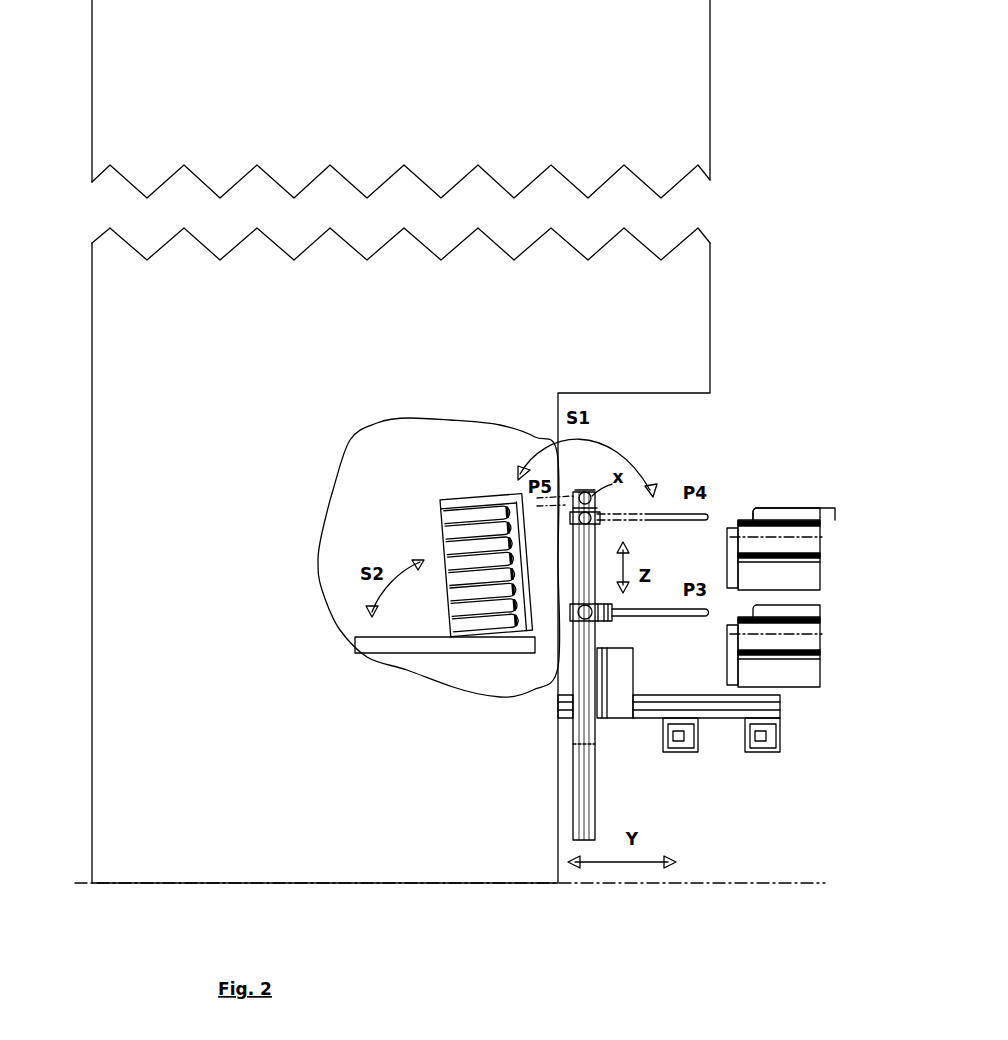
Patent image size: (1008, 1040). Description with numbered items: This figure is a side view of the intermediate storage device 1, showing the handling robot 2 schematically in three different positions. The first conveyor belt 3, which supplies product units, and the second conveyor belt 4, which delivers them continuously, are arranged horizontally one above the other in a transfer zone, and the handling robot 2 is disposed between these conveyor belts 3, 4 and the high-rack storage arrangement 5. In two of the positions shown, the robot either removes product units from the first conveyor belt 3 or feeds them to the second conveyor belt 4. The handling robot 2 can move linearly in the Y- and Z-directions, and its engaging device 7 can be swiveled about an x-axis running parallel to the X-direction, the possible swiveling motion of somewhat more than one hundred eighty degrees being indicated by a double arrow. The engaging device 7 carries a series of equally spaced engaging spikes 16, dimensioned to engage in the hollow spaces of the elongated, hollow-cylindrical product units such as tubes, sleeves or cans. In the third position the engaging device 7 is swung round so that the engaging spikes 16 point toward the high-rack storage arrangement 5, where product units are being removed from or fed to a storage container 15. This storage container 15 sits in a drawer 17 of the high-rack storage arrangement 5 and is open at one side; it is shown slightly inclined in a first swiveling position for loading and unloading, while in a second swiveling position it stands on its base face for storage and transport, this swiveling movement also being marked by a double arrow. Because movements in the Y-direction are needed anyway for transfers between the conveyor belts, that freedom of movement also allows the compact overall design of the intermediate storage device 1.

The intermediate storage device 1 is at (760, 217).
The handling robot 2 is at (702, 802).
The first conveyor belt 3 is at (780, 638).
The second conveyor belt 4 is at (782, 542).
The high-rack storage arrangement 5 is at (401, 555).
The engaging device 7 is at (570, 614).
The storage container 15 is at (438, 512).
The engaging spikes 16 is at (650, 614).
The drawer 17 is at (380, 645).